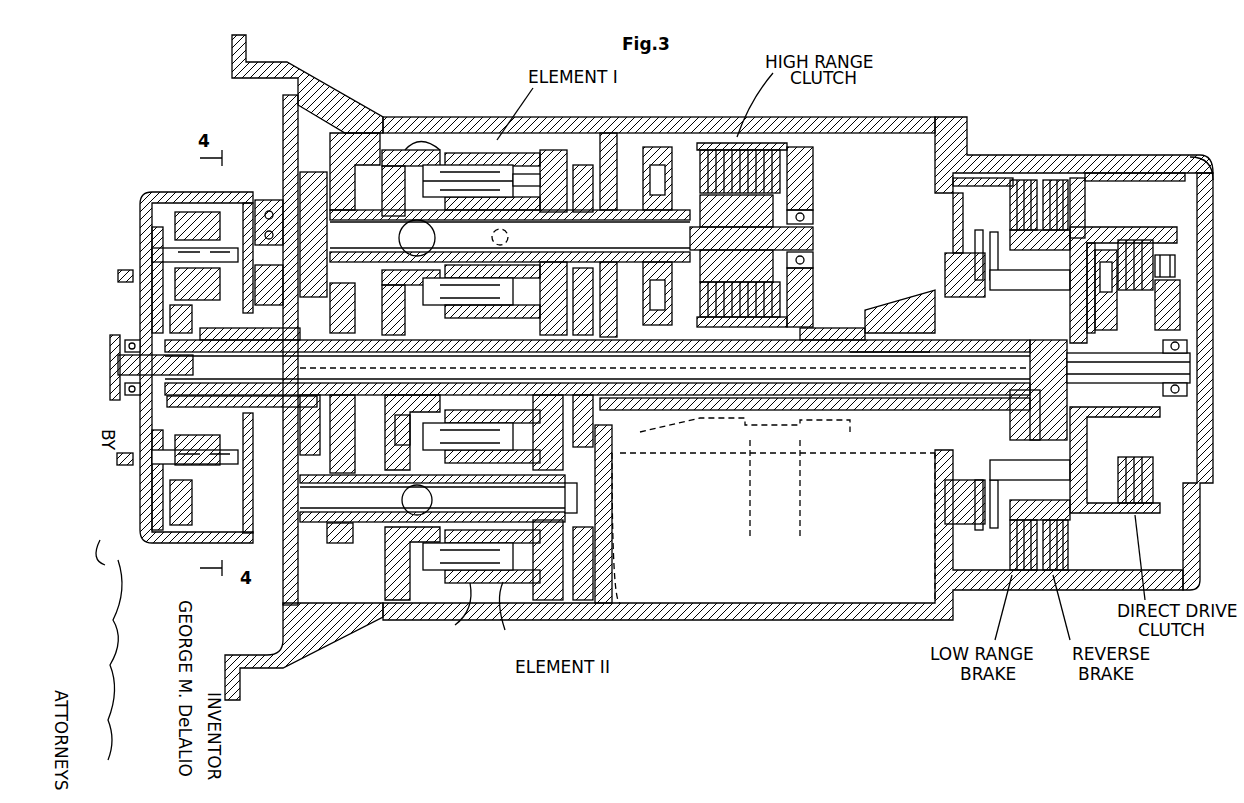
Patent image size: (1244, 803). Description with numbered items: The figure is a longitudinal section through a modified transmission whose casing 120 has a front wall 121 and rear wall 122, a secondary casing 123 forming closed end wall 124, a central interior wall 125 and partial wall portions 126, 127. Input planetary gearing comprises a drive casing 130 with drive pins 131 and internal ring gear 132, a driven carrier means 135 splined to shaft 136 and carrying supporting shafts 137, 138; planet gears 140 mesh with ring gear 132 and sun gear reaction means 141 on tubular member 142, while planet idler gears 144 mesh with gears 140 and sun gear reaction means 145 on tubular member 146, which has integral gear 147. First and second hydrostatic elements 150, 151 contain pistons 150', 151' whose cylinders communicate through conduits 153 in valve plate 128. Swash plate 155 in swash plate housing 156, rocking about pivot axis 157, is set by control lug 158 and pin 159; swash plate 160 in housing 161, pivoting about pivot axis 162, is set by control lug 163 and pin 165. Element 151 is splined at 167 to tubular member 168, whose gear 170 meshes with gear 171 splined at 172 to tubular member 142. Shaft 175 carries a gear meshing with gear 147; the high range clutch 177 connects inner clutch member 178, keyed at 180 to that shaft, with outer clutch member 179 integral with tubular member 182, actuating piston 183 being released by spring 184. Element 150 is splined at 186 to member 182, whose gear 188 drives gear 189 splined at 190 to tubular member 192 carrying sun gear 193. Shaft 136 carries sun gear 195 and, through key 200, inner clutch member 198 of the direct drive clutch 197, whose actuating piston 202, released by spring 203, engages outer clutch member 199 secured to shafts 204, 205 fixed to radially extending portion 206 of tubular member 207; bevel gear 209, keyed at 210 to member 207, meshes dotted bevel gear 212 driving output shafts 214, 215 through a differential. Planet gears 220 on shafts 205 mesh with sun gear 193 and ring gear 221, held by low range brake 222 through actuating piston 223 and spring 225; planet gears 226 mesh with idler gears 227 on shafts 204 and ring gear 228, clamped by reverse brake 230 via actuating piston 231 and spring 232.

The casing 120 is at (762, 118).
The front wall 121 is at (283, 165).
The rear wall 122 is at (940, 208).
The secondary casing 123 is at (1135, 157).
The closed end wall 124 is at (1200, 185).
The central interior wall 125 is at (612, 508).
The wall portion 126 is at (338, 160).
The wall portion 127 is at (813, 155).
The valve plate 128 is at (580, 535).
The drive casing 130 is at (148, 215).
The drive pins 131 is at (122, 270).
The internal ring gear 132 is at (240, 202).
The driven carrier means 135 is at (152, 299).
The longitudinally extending shaft 136 is at (475, 318).
The supporting shafts 137 is at (160, 253).
The supporting shafts 138 is at (195, 465).
The planet gear 140 is at (185, 212).
The sun gear reaction means 141 is at (170, 316).
The tubular member 142 is at (215, 345).
The planet idler gear 144 is at (190, 525).
The sun gear reaction means 145 is at (190, 405).
The tubular member 146 is at (255, 396).
The gear 147 is at (310, 450).
The first hydrostatic element 150 is at (524, 208).
The pistons 150' is at (499, 201).
The second hydrostatic element 151 is at (493, 584).
The pistons 151' is at (481, 488).
The conduits 153 is at (583, 165).
The swash plate 155 is at (448, 153).
The swash plate housing 156 is at (418, 133).
The pivot axis 157 is at (400, 237).
The control lug 158 is at (520, 238).
The pin 159 is at (510, 238).
The swash plate 160 is at (410, 450).
The swash plate housing 161 is at (352, 415).
The pivot axis 162 is at (395, 497).
The control lug 163 is at (490, 496).
The pin 165 is at (560, 505).
The spline 167 is at (432, 500).
The tubular member 168 is at (333, 543).
The gear 170 is at (385, 555).
The gear 171 is at (395, 428).
The spline 172 is at (410, 344).
The shaft 175 is at (312, 172).
The high range clutch 177 is at (785, 175).
The inner clutch member 178 is at (773, 205).
The outer clutch member 179 is at (712, 143).
The key 180 is at (813, 235).
The elongated tubular member 182 is at (380, 205).
The actuating piston 183 is at (665, 147).
The spring 184 is at (652, 180).
The spline 186 is at (480, 166).
The gear 188 is at (610, 133).
The gear 189 is at (583, 447).
The spline 190 is at (598, 375).
The tubular member 192 is at (680, 352).
The sun gear 193 is at (1010, 398).
The sun gear 195 is at (1045, 438).
The direct drive clutch 197 is at (1160, 253).
The inner clutch member 198 is at (1172, 272).
The outer clutch member 199 is at (1205, 170).
The key 200 is at (1190, 375).
The actuating piston 202 is at (1120, 243).
The spring 203 is at (1110, 310).
The shafts 204 is at (1030, 470).
The shafts 205 is at (1030, 277).
The radially extending portion 206 is at (965, 398).
The tubular member 207 is at (817, 333).
The beveled gear 209 is at (905, 305).
The key 210 is at (875, 352).
The bevel gear 212 is at (822, 460).
The output shaft 214 is at (740, 418).
The output shaft 215 is at (748, 488).
The planet gears 220 is at (950, 262).
The ring gear 221 is at (1010, 236).
The low range brake 222 is at (1022, 180).
The actuating piston 223 is at (960, 180).
The spring 225 is at (975, 240).
The planet gears 226 is at (1092, 243).
The planet idler gear 227 is at (1118, 470).
The ring gear 228 is at (1078, 178).
The reverse brake 230 is at (1060, 180).
The actuating piston 231 is at (1150, 173).
The spring 232 is at (1180, 290).